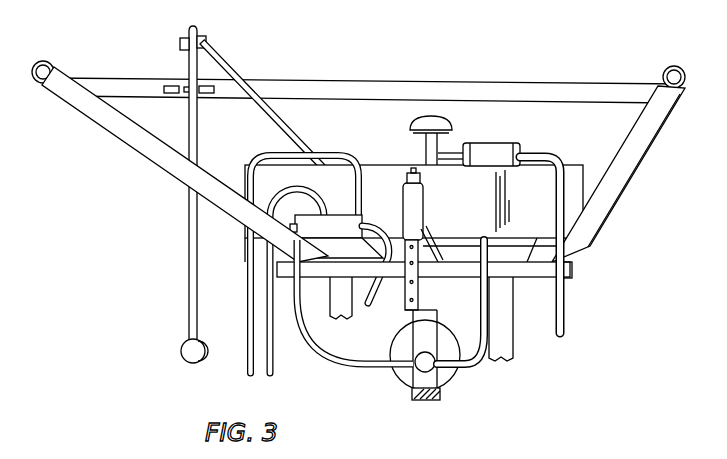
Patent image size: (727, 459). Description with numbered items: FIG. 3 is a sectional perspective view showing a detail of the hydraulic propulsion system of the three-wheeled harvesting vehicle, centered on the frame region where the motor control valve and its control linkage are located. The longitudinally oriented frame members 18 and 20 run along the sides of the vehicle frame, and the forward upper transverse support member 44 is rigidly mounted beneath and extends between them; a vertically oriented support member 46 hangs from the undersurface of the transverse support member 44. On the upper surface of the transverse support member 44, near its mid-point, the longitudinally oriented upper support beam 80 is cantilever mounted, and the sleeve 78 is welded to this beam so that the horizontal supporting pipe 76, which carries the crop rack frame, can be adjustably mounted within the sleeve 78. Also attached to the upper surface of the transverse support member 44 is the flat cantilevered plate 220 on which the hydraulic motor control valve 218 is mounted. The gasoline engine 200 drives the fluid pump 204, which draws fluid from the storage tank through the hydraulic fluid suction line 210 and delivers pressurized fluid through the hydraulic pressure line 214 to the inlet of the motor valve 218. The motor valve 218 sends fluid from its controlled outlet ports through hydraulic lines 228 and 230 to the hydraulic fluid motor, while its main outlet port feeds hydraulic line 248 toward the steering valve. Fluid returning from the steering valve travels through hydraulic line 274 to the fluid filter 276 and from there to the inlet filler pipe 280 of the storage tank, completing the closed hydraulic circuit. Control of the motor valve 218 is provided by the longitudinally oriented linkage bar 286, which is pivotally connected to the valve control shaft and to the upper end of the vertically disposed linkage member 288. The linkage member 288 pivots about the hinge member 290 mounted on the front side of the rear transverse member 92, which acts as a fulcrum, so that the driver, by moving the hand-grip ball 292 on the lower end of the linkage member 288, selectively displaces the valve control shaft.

The longitudinally oriented frame member 18 is at (140, 148).
The longitudinally oriented frame member 20 is at (630, 150).
The forward upper transverse support member 44 is at (449, 274).
The vertically oriented support member 46 is at (512, 338).
The horizontal supporting pipe 76 is at (411, 176).
The sleeve 78 is at (425, 196).
The longitudinally oriented upper support beam 80 is at (434, 237).
The rear transverse member 92 is at (369, 90).
The gasoline engine 200 is at (405, 384).
The fluid pump 204 is at (433, 367).
The hydraulic fluid suction line 210 is at (490, 306).
The hydraulic pressure line 214 is at (324, 351).
The hydraulic motor control valve 218 is at (292, 228).
The flat cantilevered plate 220 is at (339, 236).
The hydraulic line 228 is at (273, 348).
The hydraulic line 230 is at (325, 152).
The hydraulic line 248 is at (369, 302).
The hydraulic line 274 is at (565, 301).
The fluid filter 276 is at (500, 143).
The inlet filler pipe 280 is at (450, 125).
The longitudinally oriented linkage bar 286 is at (222, 75).
The vertically disposed linkage member 288 is at (190, 259).
The hinge member 290 is at (172, 84).
The hand-grip ball 292 is at (182, 354).